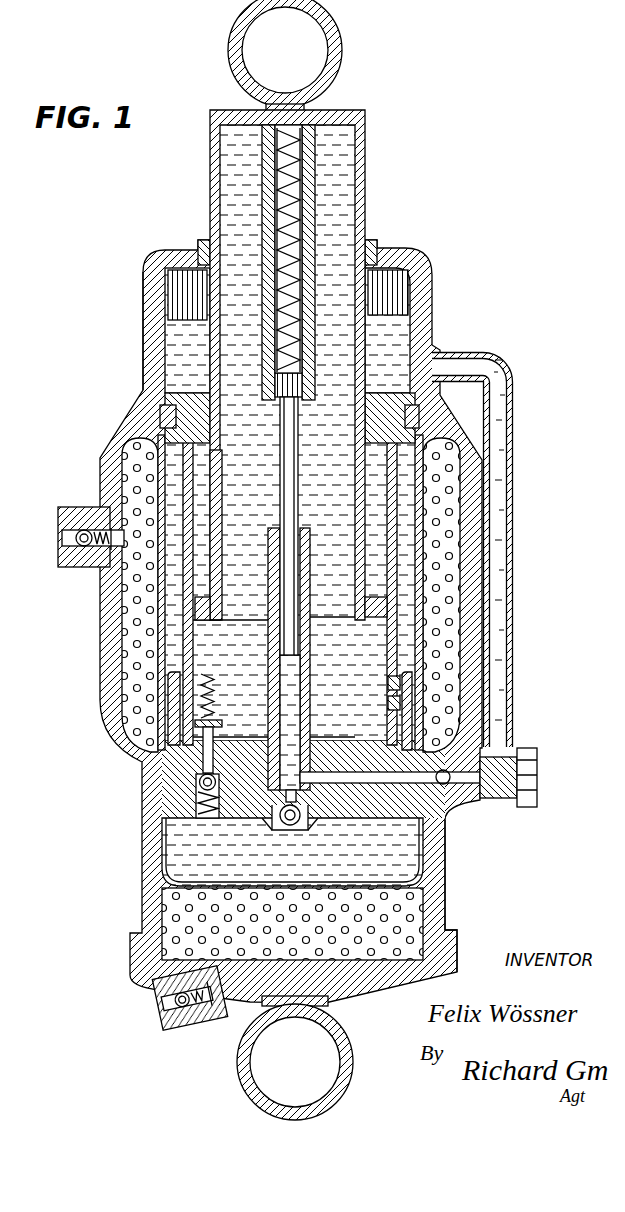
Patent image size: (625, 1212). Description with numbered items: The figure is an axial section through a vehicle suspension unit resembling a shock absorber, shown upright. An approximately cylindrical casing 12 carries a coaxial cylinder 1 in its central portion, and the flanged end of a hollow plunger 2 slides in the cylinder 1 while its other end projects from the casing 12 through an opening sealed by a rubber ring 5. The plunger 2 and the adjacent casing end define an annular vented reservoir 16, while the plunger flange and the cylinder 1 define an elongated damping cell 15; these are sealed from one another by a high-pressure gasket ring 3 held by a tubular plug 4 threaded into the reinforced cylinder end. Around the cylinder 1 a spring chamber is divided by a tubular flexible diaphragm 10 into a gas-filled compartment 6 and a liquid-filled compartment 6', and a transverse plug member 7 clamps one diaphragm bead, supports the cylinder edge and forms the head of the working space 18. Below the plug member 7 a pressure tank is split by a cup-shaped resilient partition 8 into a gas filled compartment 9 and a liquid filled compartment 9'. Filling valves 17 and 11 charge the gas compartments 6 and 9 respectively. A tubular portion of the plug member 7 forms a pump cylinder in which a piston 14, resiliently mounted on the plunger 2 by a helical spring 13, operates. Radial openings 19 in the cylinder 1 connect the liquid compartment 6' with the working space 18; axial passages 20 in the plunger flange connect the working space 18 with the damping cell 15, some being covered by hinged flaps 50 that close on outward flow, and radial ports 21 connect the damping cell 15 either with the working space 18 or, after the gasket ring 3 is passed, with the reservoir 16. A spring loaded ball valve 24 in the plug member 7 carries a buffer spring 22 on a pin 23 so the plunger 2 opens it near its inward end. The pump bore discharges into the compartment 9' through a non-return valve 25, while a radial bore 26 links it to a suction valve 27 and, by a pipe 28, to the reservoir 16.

The cylinder 1 is at (395, 525).
The hollow plunger 2 is at (210, 152).
The high-pressure gasket ring 3 is at (372, 440).
The tubular plug 4 is at (160, 383).
The rubber ring 5 is at (378, 246).
The gas-filled compartment 6 is at (276, 621).
The liquid-filled compartment 6' is at (331, 595).
The plug member 7 is at (340, 800).
The resilient partition 8 is at (300, 892).
The gas filled compartment 9 is at (439, 896).
The liquid filled compartment 9' is at (265, 852).
The flexible diaphragm 10 is at (165, 452).
The filling valve 11 is at (163, 1000).
The casing 12 is at (150, 283).
The helical spring 13 is at (303, 200).
The piston 14 is at (280, 457).
The damping cell 15 is at (200, 566).
The vented reservoir 16 is at (408, 292).
The filling valve 17 is at (60, 522).
The working space 18 is at (350, 340).
The radial openings 19 is at (392, 702).
The axial passages 20 is at (208, 612).
The radial ports 21 is at (220, 490).
The buffer spring 22 is at (212, 698).
The pin 23 is at (213, 753).
The spring loaded ball valve 24 is at (200, 777).
The non-return valve 25 is at (262, 828).
The radial bore 26 is at (355, 775).
The suction valve 27 is at (445, 790).
The pipe 28 is at (505, 422).
The hinged flaps 50 is at (358, 595).